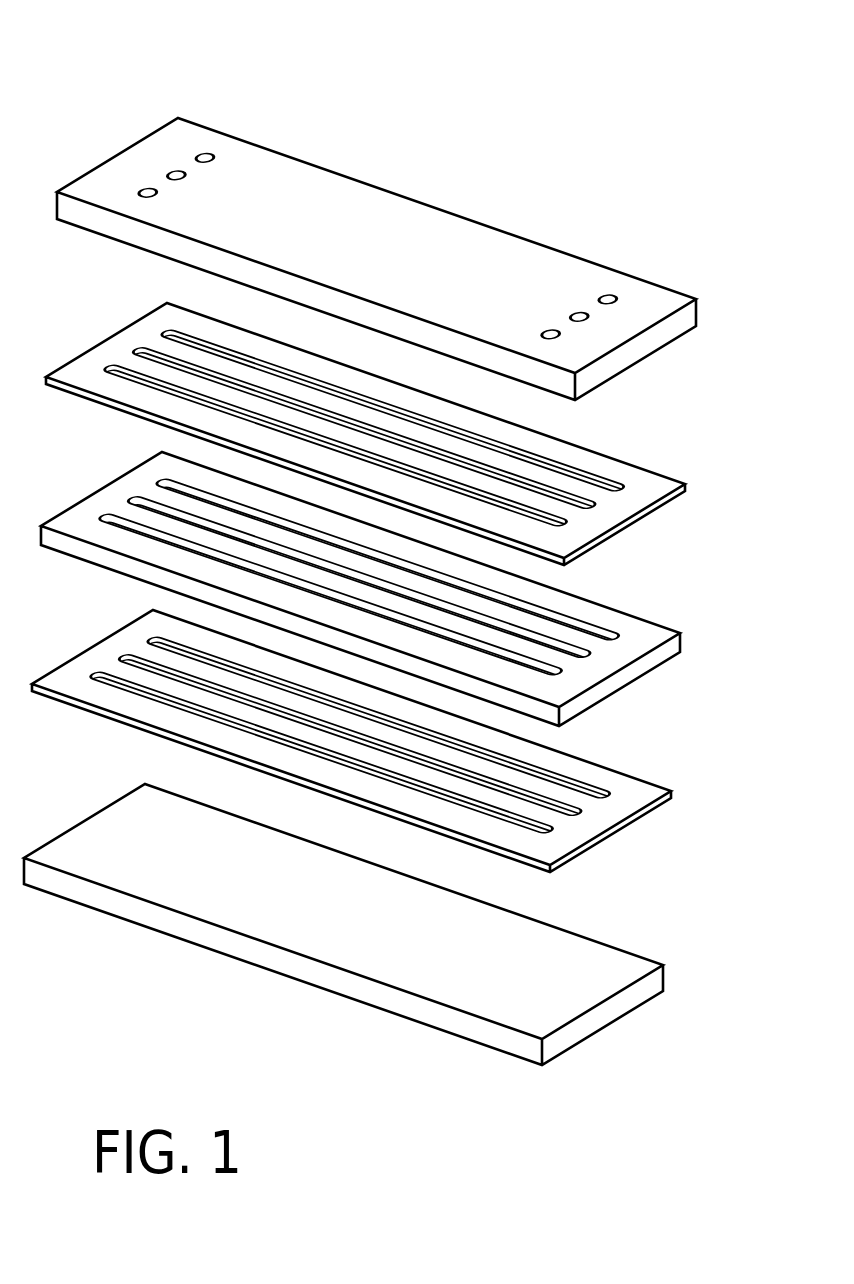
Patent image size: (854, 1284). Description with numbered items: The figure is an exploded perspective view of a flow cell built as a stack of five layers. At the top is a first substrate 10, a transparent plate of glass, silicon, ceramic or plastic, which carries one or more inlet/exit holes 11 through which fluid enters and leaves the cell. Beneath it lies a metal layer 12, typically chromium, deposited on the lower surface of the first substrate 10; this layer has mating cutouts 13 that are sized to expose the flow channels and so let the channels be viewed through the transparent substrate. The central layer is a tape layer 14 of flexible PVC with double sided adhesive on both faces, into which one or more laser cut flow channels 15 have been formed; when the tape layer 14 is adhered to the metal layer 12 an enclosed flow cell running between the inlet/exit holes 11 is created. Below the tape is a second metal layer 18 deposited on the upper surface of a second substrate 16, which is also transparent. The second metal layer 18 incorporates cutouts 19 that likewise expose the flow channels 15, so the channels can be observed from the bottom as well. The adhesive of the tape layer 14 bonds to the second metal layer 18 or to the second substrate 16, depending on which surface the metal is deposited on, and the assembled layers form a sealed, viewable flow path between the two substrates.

The first substrate 10 is at (503, 255).
The inlet/exit holes 11 is at (204, 152).
The metal layer 12 is at (655, 485).
The mating cutouts 13 is at (577, 463).
The tape layer 14 is at (650, 642).
The flow channels 15 is at (582, 630).
The second substrate 16 is at (620, 968).
The second metal layer 18 is at (637, 793).
The cutouts 19 is at (573, 790).